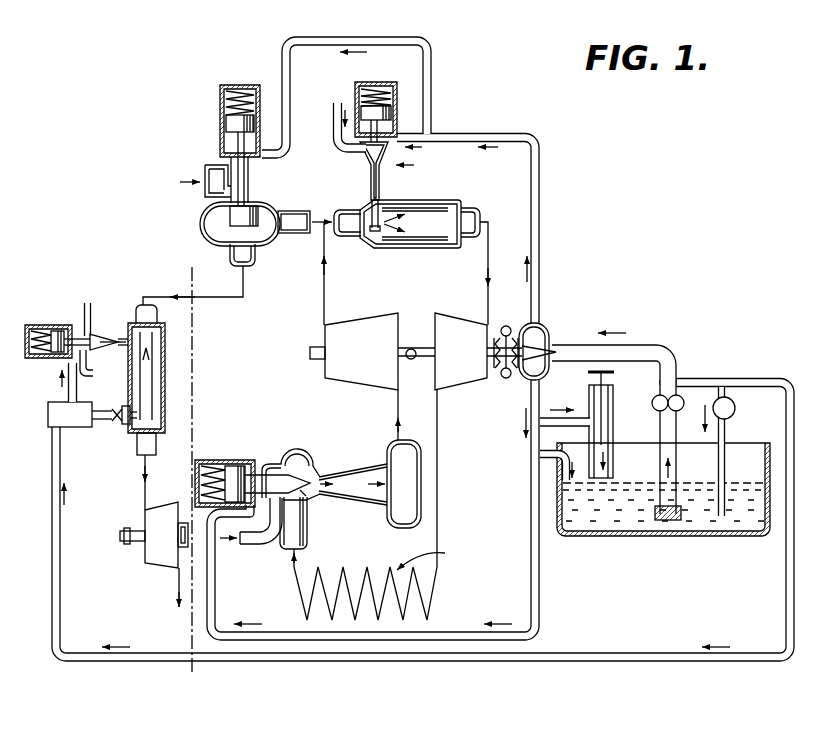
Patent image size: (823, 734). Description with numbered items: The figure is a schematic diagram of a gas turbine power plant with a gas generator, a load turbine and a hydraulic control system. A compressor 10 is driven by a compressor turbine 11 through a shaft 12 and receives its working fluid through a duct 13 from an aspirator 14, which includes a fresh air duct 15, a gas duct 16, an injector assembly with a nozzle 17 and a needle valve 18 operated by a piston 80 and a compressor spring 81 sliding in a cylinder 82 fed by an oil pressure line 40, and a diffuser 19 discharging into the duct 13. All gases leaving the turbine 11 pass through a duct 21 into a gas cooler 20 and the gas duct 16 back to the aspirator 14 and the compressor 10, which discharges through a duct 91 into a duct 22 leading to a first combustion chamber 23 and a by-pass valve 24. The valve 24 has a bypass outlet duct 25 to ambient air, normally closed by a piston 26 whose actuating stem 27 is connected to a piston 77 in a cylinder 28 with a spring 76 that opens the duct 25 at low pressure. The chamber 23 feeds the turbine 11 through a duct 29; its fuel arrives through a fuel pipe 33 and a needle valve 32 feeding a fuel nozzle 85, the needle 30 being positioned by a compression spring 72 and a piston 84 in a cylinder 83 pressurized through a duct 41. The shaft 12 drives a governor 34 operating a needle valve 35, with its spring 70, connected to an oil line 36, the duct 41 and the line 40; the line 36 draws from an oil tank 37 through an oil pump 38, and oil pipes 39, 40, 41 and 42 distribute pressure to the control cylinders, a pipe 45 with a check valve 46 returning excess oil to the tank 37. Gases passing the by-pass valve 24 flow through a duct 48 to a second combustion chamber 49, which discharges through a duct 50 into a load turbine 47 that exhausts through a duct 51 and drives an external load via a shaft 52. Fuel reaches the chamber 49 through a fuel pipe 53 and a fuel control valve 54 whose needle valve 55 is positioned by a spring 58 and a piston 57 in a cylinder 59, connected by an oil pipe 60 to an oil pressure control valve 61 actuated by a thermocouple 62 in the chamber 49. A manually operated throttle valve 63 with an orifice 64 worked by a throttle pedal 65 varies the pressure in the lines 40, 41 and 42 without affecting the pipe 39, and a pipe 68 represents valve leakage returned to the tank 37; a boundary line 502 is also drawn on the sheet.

The compressor 10 is at (366, 306).
The compressor turbine 11 is at (450, 318).
The shaft 12 is at (418, 346).
The duct 13 is at (397, 407).
The aspirator 14 is at (305, 450).
The fresh air duct 15 is at (248, 546).
The gas duct 16 is at (293, 563).
The nozzle 17 is at (326, 494).
The needle valve 18 is at (246, 472).
The diffuser 19 is at (353, 489).
The gas cooler 20 is at (345, 568).
The duct 21 is at (438, 478).
The duct 22 is at (322, 217).
The first combustion chamber 23 is at (412, 200).
The by-pass valve 24 is at (204, 213).
The bypass outlet duct 25 is at (210, 170).
The piston 26 is at (210, 236).
The actuating stem 27 is at (236, 141).
The cylinder 28 is at (228, 105).
The duct 29 is at (489, 243).
The needle 30 is at (364, 152).
The needle valve 32 is at (416, 166).
The fuel pipe 33 is at (333, 119).
The governor 34 is at (508, 320).
The needle valve 35 is at (551, 325).
The oil line 36 is at (640, 349).
The oil tank 37 is at (605, 535).
The oil pump 38 is at (652, 404).
The oil pipe 39 is at (736, 379).
The oil pressure line 40 is at (530, 390).
The duct 41 is at (542, 236).
The oil pipe 42 is at (375, 38).
The pipe 45 is at (727, 430).
The check valve 46 is at (736, 407).
The load turbine 47 is at (148, 560).
The duct 48 is at (200, 298).
The second combustion chamber 49 is at (158, 366).
The duct 50 is at (144, 465).
The duct 51 is at (178, 580).
The shaft 52 is at (119, 533).
The fuel pipe 53 is at (92, 312).
The fuel control valve 54 is at (86, 372).
The needle valve 55 is at (84, 350).
The piston 57 is at (55, 328).
The spring 58 is at (32, 325).
The cylinder 59 is at (35, 350).
The oil pipe 60 is at (80, 396).
The oil pressure control valve 61 is at (47, 418).
The thermocouple 62 is at (152, 425).
The throttle valve 63 is at (587, 394).
The orifice 64 is at (588, 433).
The throttle pedal 65 is at (605, 372).
The pipe 68 is at (540, 455).
The spring 70 is at (500, 378).
The compression spring 72 is at (380, 92).
The spring 76 is at (240, 92).
The piston 77 is at (226, 120).
The piston 80 is at (228, 463).
The compressor spring 81 is at (203, 468).
The cylinder 82 is at (197, 473).
The cylinder 83 is at (362, 95).
The piston 84 is at (392, 113).
The fuel nozzle 85 is at (382, 232).
The duct 91 is at (322, 297).
The boundary line 502 is at (191, 284).